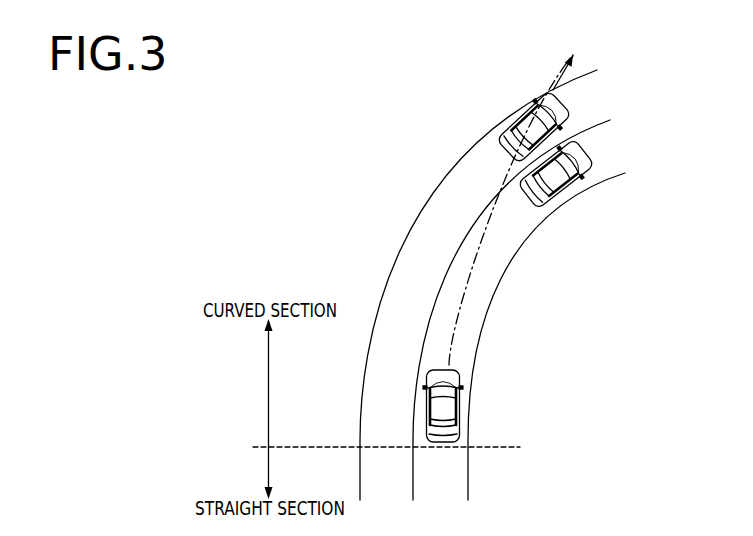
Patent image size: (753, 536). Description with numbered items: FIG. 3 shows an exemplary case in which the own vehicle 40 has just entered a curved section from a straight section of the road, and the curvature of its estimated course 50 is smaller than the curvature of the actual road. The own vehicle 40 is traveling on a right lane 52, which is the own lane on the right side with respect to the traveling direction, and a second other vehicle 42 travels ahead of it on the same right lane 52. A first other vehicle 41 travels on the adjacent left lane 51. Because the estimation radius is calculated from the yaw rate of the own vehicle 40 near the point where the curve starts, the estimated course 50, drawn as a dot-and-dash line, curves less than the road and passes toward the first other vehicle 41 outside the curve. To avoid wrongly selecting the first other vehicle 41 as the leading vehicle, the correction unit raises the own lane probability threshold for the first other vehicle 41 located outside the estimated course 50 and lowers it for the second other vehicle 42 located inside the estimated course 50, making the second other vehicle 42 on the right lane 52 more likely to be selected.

The own vehicle 40 is at (462, 425).
The first other vehicle 41 is at (510, 112).
The second other vehicle 42 is at (564, 194).
The estimated course 50 is at (563, 80).
The left lane 51 is at (592, 94).
The right lane 52 is at (619, 151).